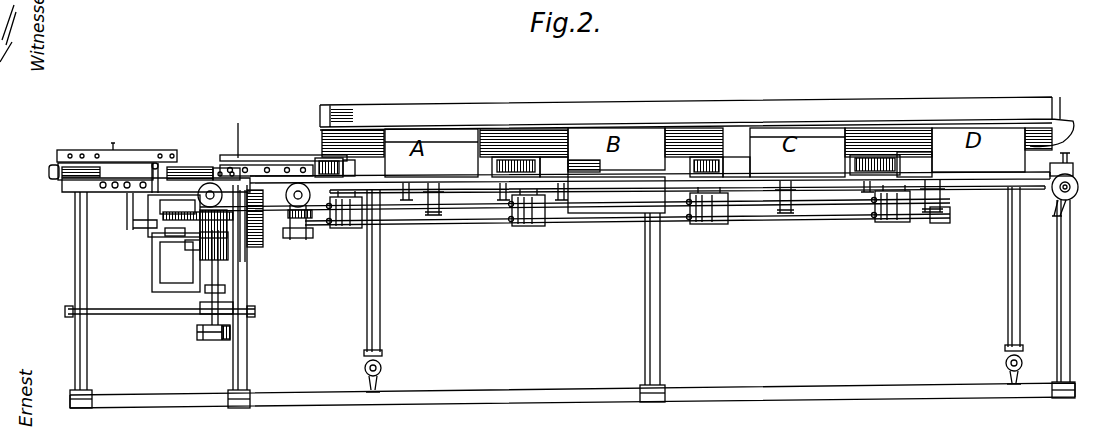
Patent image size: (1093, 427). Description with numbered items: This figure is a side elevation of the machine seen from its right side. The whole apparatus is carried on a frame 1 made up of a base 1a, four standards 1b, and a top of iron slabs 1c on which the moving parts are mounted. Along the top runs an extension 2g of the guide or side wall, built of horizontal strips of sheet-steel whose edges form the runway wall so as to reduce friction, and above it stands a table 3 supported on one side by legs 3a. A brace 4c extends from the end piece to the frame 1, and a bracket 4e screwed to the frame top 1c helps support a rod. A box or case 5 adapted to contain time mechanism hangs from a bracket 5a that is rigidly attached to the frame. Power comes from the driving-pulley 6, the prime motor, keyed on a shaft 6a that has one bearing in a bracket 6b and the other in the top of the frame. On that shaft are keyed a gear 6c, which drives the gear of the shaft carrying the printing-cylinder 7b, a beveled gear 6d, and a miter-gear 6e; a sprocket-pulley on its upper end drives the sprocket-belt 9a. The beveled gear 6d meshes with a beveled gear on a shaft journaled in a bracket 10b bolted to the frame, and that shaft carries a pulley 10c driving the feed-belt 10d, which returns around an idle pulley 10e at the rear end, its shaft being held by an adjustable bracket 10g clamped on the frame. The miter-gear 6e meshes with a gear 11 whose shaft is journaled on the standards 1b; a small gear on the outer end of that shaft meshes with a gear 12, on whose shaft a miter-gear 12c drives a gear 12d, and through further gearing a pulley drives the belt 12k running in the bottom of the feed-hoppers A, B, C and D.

The frame 1 is at (190, 138).
The base 1a is at (545, 379).
The standards 1b is at (78, 295).
The iron slabs 1c is at (88, 191).
The extension of the guide or side wall 2g is at (243, 157).
The table 3 is at (1000, 100).
The legs 3a is at (373, 312).
The brace 4c is at (130, 213).
The bracket 4e is at (155, 230).
The box or case 5 is at (176, 262).
The bracket 5a is at (172, 238).
The driving-pulley 6 is at (200, 338).
The shaft 6a is at (212, 292).
The bracket 6b is at (222, 342).
The gear 6c is at (198, 247).
The beveled gear 6d is at (182, 284).
The miter-gear 6e is at (213, 290).
The printing-cylinder 7b is at (183, 168).
The sprocket-belt 9a is at (204, 185).
The bracket 10b is at (254, 194).
The pulley 10c is at (157, 212).
The feed-belt 10d is at (302, 262).
The idle pulley 10e is at (1062, 208).
The adjustable bracket 10g is at (239, 125).
The gear 11 is at (216, 256).
The gear 12 is at (250, 238).
The miter-gear 12c is at (348, 230).
The gear 12d is at (296, 218).
The belt 12k is at (418, 205).